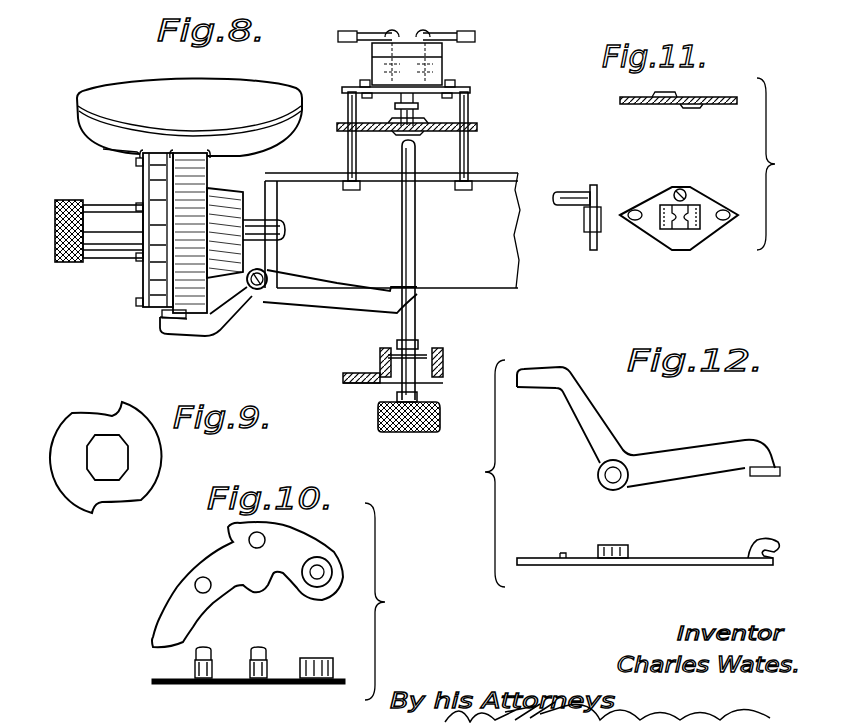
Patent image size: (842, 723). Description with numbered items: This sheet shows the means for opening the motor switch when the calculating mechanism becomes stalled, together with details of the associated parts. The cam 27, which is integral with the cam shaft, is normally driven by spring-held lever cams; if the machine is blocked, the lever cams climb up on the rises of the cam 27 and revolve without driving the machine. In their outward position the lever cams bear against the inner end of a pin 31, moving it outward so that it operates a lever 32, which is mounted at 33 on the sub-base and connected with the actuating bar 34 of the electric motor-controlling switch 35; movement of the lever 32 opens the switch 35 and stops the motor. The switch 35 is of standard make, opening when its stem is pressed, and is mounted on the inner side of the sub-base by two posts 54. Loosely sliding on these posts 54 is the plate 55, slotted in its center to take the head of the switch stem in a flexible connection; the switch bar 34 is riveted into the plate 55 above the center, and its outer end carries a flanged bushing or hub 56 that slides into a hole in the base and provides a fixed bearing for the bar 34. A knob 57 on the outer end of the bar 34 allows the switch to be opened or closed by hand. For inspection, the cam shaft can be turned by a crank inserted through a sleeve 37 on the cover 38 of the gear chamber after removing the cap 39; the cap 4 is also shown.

In FIG. 8, the cap 4 is at (78, 112).
In FIG. 8, the cap 39 is at (66, 200).
In FIG. 8, the sleeve 37 is at (114, 212).
In FIG. 8, the cover 38 is at (140, 283).
In FIG. 8, the pin 31 is at (160, 318).
In FIG. 8, the lever 32 is at (238, 302).
In FIG. 12, the lever 32 is at (600, 440).
In FIG. 8, the pivot mounting of lever 33 is at (266, 290).
In FIG. 8, the switch bar 34 is at (416, 325).
In FIG. 11, the switch bar 34 is at (680, 189).
In FIG. 8, the electric motor-controlling switch 35 is at (420, 80).
In FIG. 8, the posts 54 is at (347, 152).
In FIG. 8, the plate 55 is at (470, 127).
In FIG. 11, the plate 55 is at (653, 104).
In FIG. 8, the flanged bushing or hub 56 is at (430, 350).
In FIG. 8, the knob 57 is at (400, 433).
In FIG. 9, the cam 27 is at (82, 430).